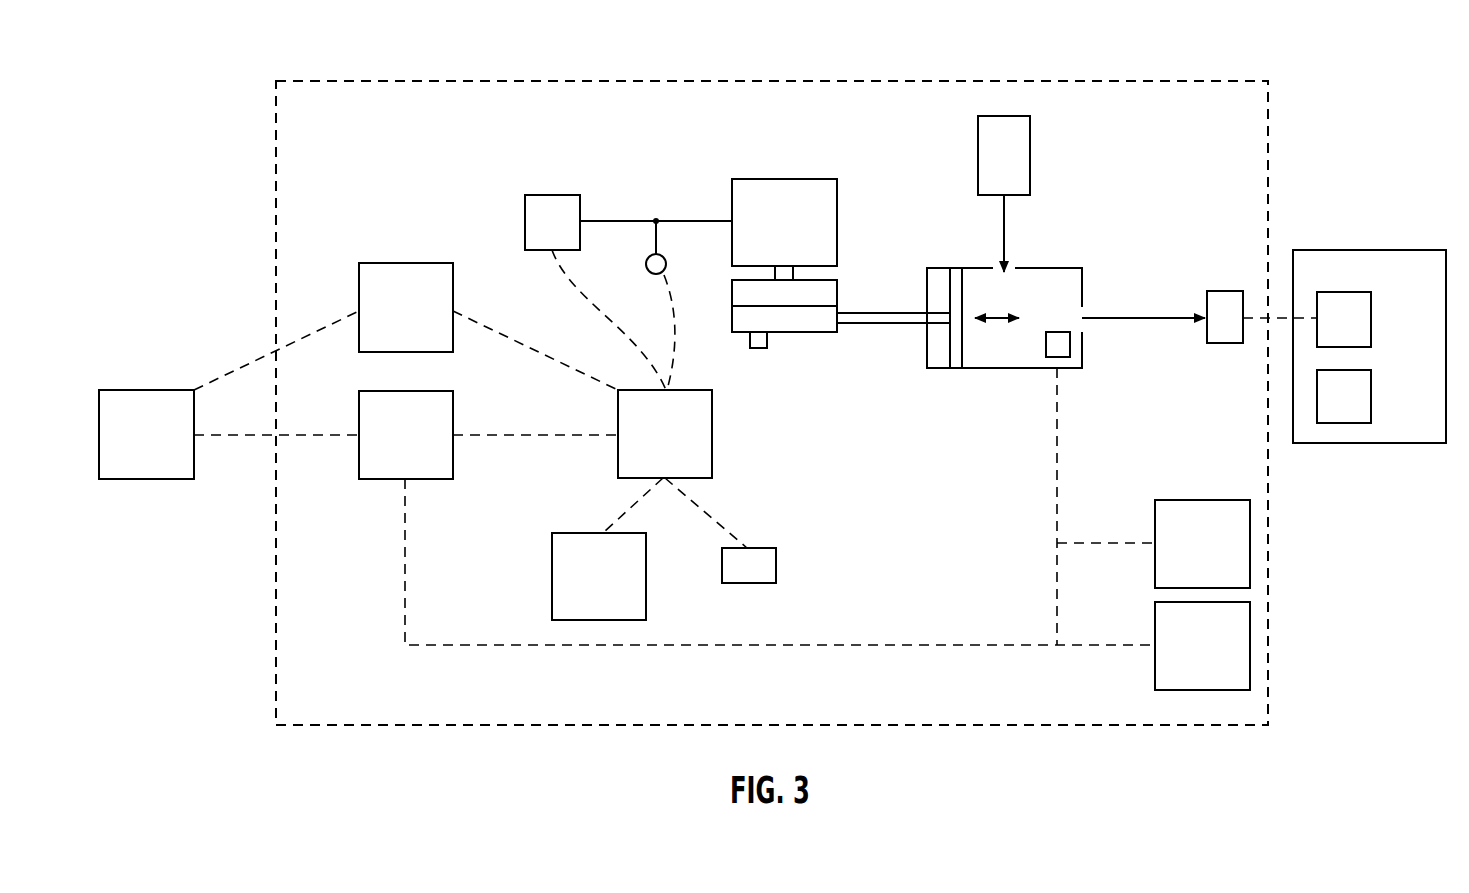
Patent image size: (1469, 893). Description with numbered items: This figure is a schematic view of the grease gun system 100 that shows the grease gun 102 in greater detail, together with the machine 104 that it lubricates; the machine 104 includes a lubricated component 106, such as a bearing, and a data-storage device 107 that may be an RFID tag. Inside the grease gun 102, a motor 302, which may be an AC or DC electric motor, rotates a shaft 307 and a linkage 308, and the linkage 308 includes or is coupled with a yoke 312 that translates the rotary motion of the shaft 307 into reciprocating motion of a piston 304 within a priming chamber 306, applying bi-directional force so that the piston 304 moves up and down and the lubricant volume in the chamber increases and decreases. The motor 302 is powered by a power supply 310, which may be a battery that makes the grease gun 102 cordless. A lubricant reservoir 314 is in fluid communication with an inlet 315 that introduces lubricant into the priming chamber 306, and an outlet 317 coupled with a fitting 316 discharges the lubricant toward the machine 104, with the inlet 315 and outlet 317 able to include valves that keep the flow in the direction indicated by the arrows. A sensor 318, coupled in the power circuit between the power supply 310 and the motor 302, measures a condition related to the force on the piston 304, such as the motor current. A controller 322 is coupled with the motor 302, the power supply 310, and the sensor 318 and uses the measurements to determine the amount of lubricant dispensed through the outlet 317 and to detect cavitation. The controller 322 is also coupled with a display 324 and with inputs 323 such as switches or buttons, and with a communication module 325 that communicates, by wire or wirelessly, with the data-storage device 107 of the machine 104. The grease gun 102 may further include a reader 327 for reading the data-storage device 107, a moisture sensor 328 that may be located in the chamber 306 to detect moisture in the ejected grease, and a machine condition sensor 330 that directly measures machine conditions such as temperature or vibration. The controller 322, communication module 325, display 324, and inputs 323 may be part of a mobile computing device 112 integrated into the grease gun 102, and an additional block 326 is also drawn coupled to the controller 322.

The grease gun system 100 is at (378, 30).
The grease gun 102 is at (1232, 80).
The machine 104 is at (1400, 250).
The lubricated component 106 is at (1365, 336).
The data-storage device 107 is at (1365, 411).
The mobile computing device 112 is at (171, 451).
The motor 302 is at (822, 178).
The piston 304 is at (962, 352).
The priming chamber 306 is at (1030, 334).
The shaft 307 is at (793, 277).
The linkage 308 is at (732, 295).
The power supply 310 is at (574, 236).
The yoke 312 is at (813, 333).
The lubricant reservoir 314 is at (1022, 116).
The inlet 315 is at (1014, 282).
The fitting 316 is at (1227, 291).
The outlet 317 is at (1092, 328).
The sensor 318 is at (647, 264).
The controller 322 is at (687, 449).
The inputs 323 is at (760, 548).
The display 324 is at (621, 591).
The communication module 325 is at (429, 451).
The user interface 326 is at (429, 325).
The reader 327 is at (1224, 559).
The moisture sensor 328 is at (1063, 358).
The machine condition sensor 330 is at (1224, 661).